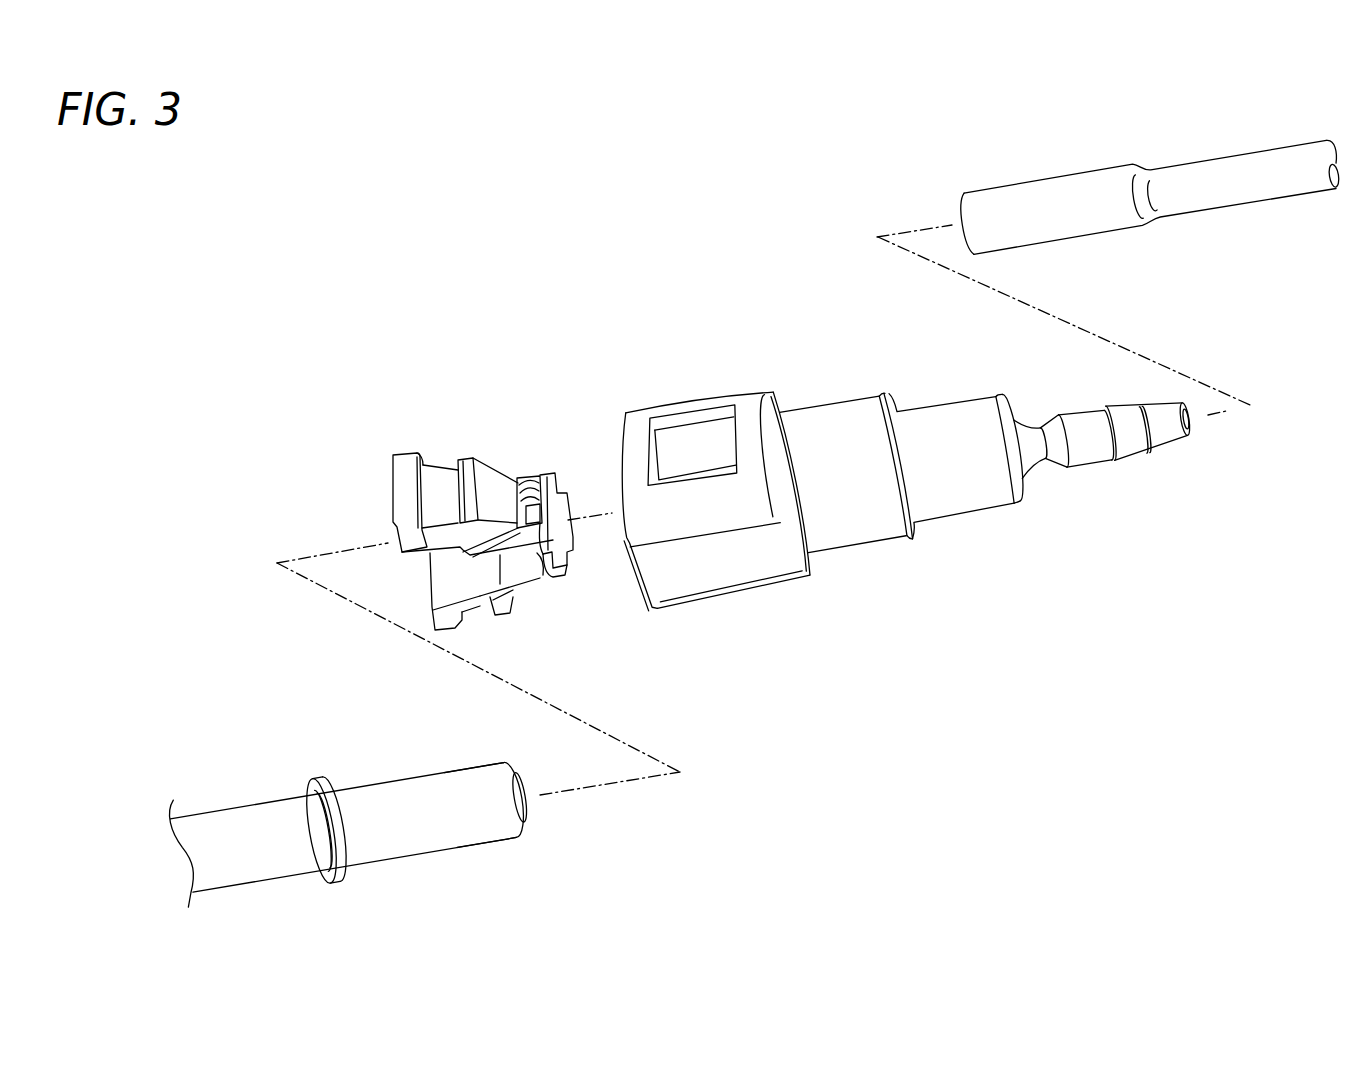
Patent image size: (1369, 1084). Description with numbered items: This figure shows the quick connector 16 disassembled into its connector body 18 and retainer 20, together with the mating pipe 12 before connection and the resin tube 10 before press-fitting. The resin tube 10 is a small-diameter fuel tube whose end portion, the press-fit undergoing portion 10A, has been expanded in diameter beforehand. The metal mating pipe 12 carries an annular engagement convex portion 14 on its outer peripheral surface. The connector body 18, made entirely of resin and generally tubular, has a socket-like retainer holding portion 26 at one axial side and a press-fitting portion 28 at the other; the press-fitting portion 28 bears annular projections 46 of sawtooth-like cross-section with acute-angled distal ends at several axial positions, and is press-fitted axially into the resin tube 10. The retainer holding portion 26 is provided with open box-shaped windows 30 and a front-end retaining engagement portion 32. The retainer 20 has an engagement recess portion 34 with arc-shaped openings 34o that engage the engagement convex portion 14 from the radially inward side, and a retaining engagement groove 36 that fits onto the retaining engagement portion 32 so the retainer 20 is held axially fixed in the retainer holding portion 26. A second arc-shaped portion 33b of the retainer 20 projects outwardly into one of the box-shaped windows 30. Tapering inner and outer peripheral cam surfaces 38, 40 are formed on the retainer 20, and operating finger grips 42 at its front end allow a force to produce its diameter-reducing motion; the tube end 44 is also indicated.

The resin tube 10 is at (1150, 231).
The press-fit undergoing portion 10A is at (1018, 196).
The mating pipe 12 is at (357, 823).
The engagement convex portion 14 is at (308, 842).
The quick connector 16 is at (577, 198).
The connector body 18 is at (885, 427).
The retainer 20 is at (467, 515).
The retainer holding portion 26 is at (694, 384).
The press-fitting portion 28 is at (1103, 435).
The box-shaped window 30 is at (725, 435).
The retaining engagement portion 32 is at (632, 443).
The second arc-shaped portion 33b is at (474, 462).
The engagement recess portion 34 is at (527, 476).
The arc-shaped opening 34o is at (521, 480).
The retaining engagement groove 36 is at (452, 468).
The inner peripheral cam surface 38 is at (463, 572).
The outer peripheral cam surface 40 is at (487, 470).
The operating finger grip 42 is at (397, 484).
The tube end 44 is at (472, 821).
The annular projection 46 is at (1078, 467).